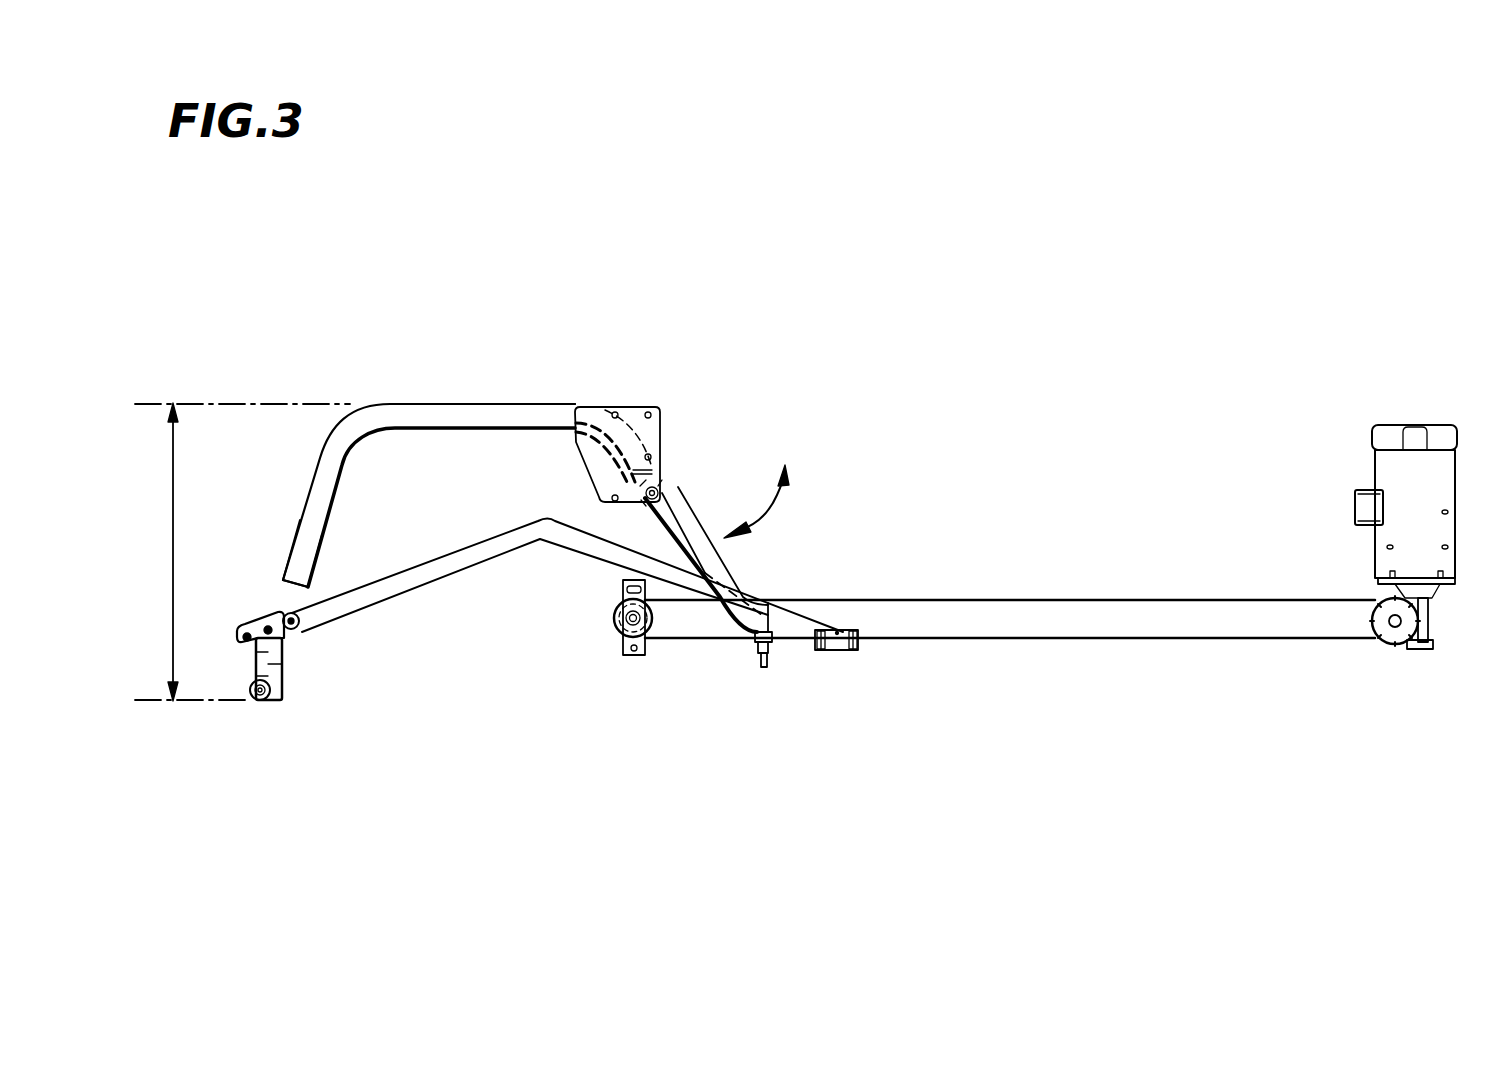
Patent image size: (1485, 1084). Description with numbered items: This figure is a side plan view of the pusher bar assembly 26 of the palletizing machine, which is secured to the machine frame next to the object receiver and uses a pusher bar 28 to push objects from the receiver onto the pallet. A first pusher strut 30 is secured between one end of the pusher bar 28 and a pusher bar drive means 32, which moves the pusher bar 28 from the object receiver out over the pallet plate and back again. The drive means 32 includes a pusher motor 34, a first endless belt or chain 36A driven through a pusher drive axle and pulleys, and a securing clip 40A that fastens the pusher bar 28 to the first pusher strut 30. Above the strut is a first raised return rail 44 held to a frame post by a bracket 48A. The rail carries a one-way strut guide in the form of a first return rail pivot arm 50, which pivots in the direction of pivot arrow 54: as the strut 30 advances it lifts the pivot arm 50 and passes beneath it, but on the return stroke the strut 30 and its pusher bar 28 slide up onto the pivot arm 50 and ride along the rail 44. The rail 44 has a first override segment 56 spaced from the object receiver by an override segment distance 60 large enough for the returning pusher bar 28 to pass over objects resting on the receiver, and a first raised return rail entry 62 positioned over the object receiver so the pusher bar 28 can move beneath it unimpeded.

The pusher bar assembly 26 is at (1037, 425).
The pusher bar 28 is at (282, 667).
The first pusher strut 30 is at (377, 590).
The pusher bar drive means 32 is at (1254, 694).
The pusher motor 34 is at (1397, 480).
The first endless belt or chain 36A is at (1139, 598).
The securing clip 40A is at (838, 651).
The first raised return rail 44 is at (316, 449).
The bracket 48A is at (634, 420).
The first return rail pivot arm 50 is at (683, 525).
The pivot arrow 54 is at (770, 512).
The first override segment 56 is at (462, 416).
The override segment distance 60 is at (170, 552).
The first raised return rail entry 62 is at (283, 580).